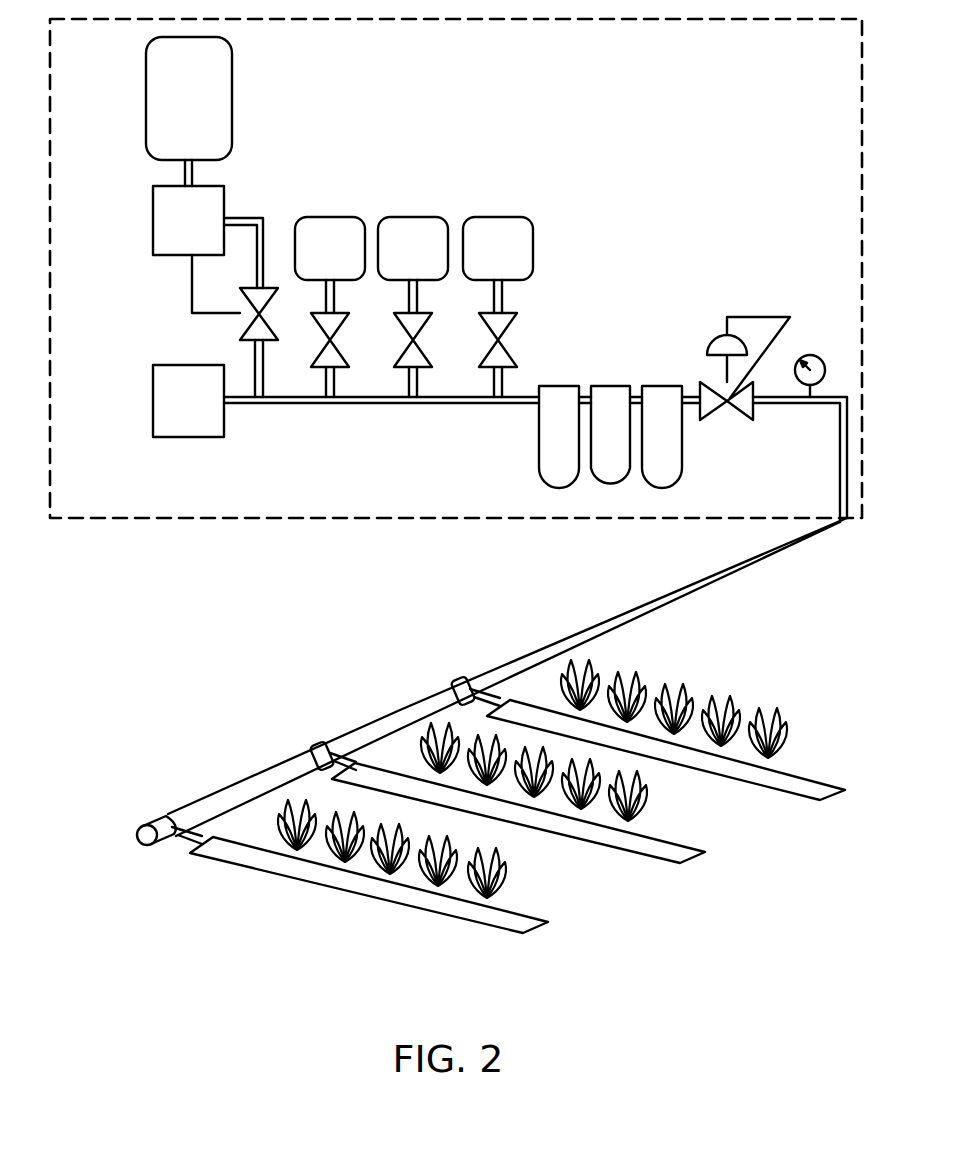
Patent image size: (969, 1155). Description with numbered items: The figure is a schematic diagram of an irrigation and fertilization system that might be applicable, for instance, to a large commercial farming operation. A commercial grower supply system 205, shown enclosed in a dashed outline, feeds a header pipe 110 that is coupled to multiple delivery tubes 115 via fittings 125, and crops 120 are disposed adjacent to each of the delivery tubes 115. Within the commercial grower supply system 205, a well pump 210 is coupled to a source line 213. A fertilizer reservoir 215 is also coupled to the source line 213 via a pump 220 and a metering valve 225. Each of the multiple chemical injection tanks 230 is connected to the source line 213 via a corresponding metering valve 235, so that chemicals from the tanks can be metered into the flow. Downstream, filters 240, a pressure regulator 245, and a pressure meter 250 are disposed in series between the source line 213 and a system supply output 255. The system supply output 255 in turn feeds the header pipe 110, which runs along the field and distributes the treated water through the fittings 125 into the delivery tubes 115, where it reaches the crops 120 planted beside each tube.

The header pipe 110 is at (528, 660).
The delivery tubes 115 is at (541, 932).
The crops 120 is at (572, 907).
The fittings 125 is at (167, 793).
The commercial grower supply system 205 is at (148, 519).
The well pump 210 is at (188, 402).
The source line 213 is at (292, 400).
The fertilizer reservoir 215 is at (188, 98).
The pump 220 is at (188, 220).
The metering valve 225 is at (236, 322).
The chemical injection tanks 230 is at (498, 250).
The metering valve 235 is at (477, 387).
The filters 240 is at (668, 405).
The pressure regulator 245 is at (730, 303).
The pressure meter 250 is at (812, 343).
The system supply output 255 is at (843, 442).